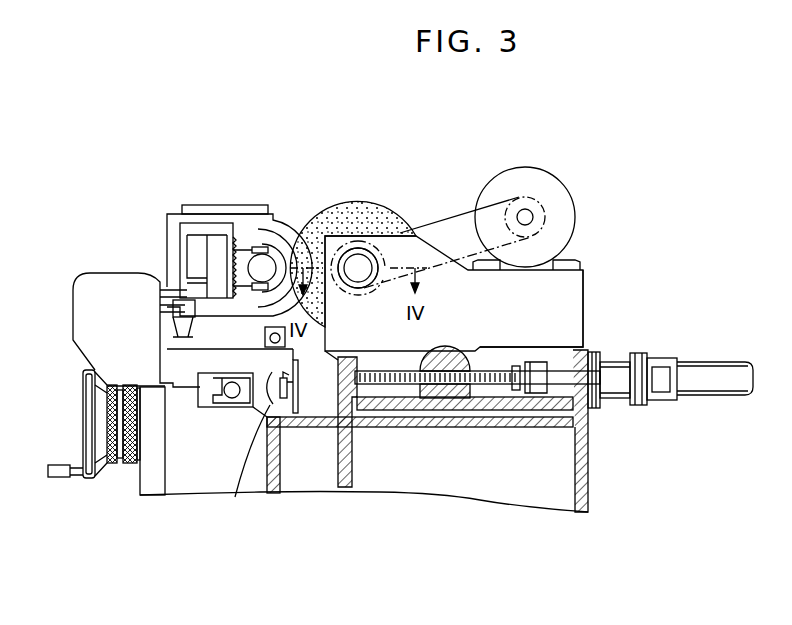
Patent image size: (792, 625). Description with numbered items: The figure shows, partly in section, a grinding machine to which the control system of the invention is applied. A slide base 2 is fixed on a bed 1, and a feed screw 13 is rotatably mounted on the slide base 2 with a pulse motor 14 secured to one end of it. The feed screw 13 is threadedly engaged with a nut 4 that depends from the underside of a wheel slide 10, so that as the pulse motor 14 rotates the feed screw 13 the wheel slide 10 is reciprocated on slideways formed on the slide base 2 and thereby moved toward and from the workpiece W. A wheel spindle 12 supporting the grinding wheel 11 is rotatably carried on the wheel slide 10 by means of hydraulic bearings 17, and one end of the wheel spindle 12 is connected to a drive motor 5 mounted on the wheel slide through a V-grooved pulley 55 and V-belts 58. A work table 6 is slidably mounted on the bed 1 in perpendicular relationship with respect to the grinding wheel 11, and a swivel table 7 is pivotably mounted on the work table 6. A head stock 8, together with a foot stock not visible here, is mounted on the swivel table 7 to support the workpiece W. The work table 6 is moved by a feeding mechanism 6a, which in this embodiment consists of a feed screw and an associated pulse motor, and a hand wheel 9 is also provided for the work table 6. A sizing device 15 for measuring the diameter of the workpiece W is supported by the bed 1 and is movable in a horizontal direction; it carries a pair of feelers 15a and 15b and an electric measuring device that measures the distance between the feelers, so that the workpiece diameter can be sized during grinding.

The bed 1 is at (348, 488).
The slide base 2 is at (507, 408).
The nut 4 is at (442, 384).
The drive motor 5 is at (565, 198).
The work table 6 is at (275, 395).
The feeding mechanism 6a is at (233, 400).
The swivel table 7 is at (280, 350).
The head stock 8 is at (245, 222).
The hand wheel 9 is at (93, 481).
The wheel slide 10 is at (566, 320).
The grinding wheel 11 is at (388, 214).
The wheel spindle 12 is at (360, 283).
The feed screw 13 is at (407, 386).
The pulse motor 14 is at (630, 402).
The sizing device 15 is at (222, 224).
The feeler 15a is at (272, 258).
The feeler 15b is at (260, 292).
The hydraulic bearings 17 is at (359, 250).
The V-grooved pulley 55 is at (378, 252).
The V-belts 58 is at (447, 219).
The workpiece W is at (297, 214).